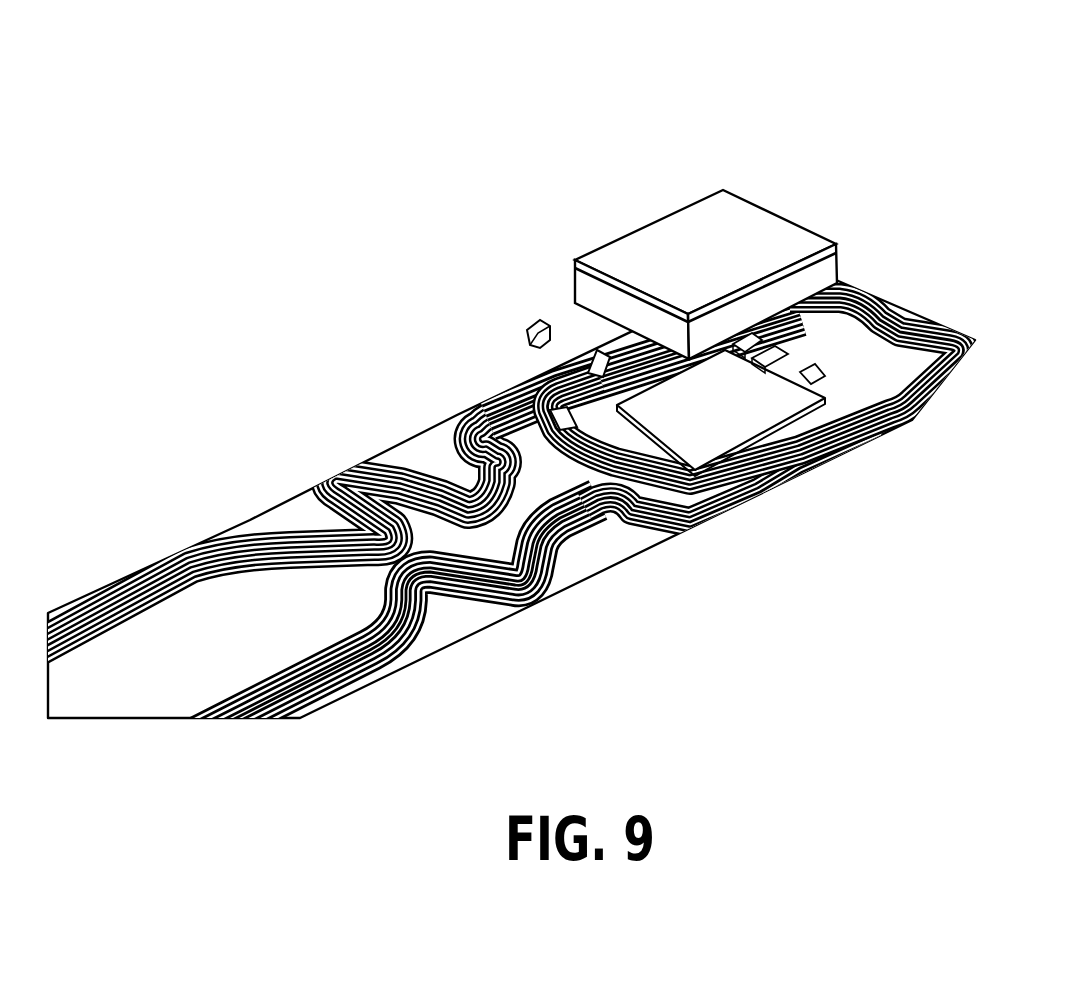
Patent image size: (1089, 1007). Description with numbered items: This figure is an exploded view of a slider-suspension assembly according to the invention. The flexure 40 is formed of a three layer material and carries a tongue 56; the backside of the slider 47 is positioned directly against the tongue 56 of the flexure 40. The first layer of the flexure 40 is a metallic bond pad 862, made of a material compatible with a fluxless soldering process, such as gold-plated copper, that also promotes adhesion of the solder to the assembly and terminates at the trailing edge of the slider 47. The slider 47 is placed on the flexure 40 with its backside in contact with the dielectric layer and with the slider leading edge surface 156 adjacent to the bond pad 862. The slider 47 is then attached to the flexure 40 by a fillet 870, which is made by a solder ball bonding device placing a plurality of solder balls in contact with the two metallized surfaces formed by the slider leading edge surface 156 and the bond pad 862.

The flexure 40 is at (908, 451).
The slider 47 is at (686, 259).
The tongue 56 is at (748, 448).
The slider leading edge surface 156 is at (596, 294).
The metallic bond pad 862 is at (594, 438).
The fillet 870 is at (523, 318).